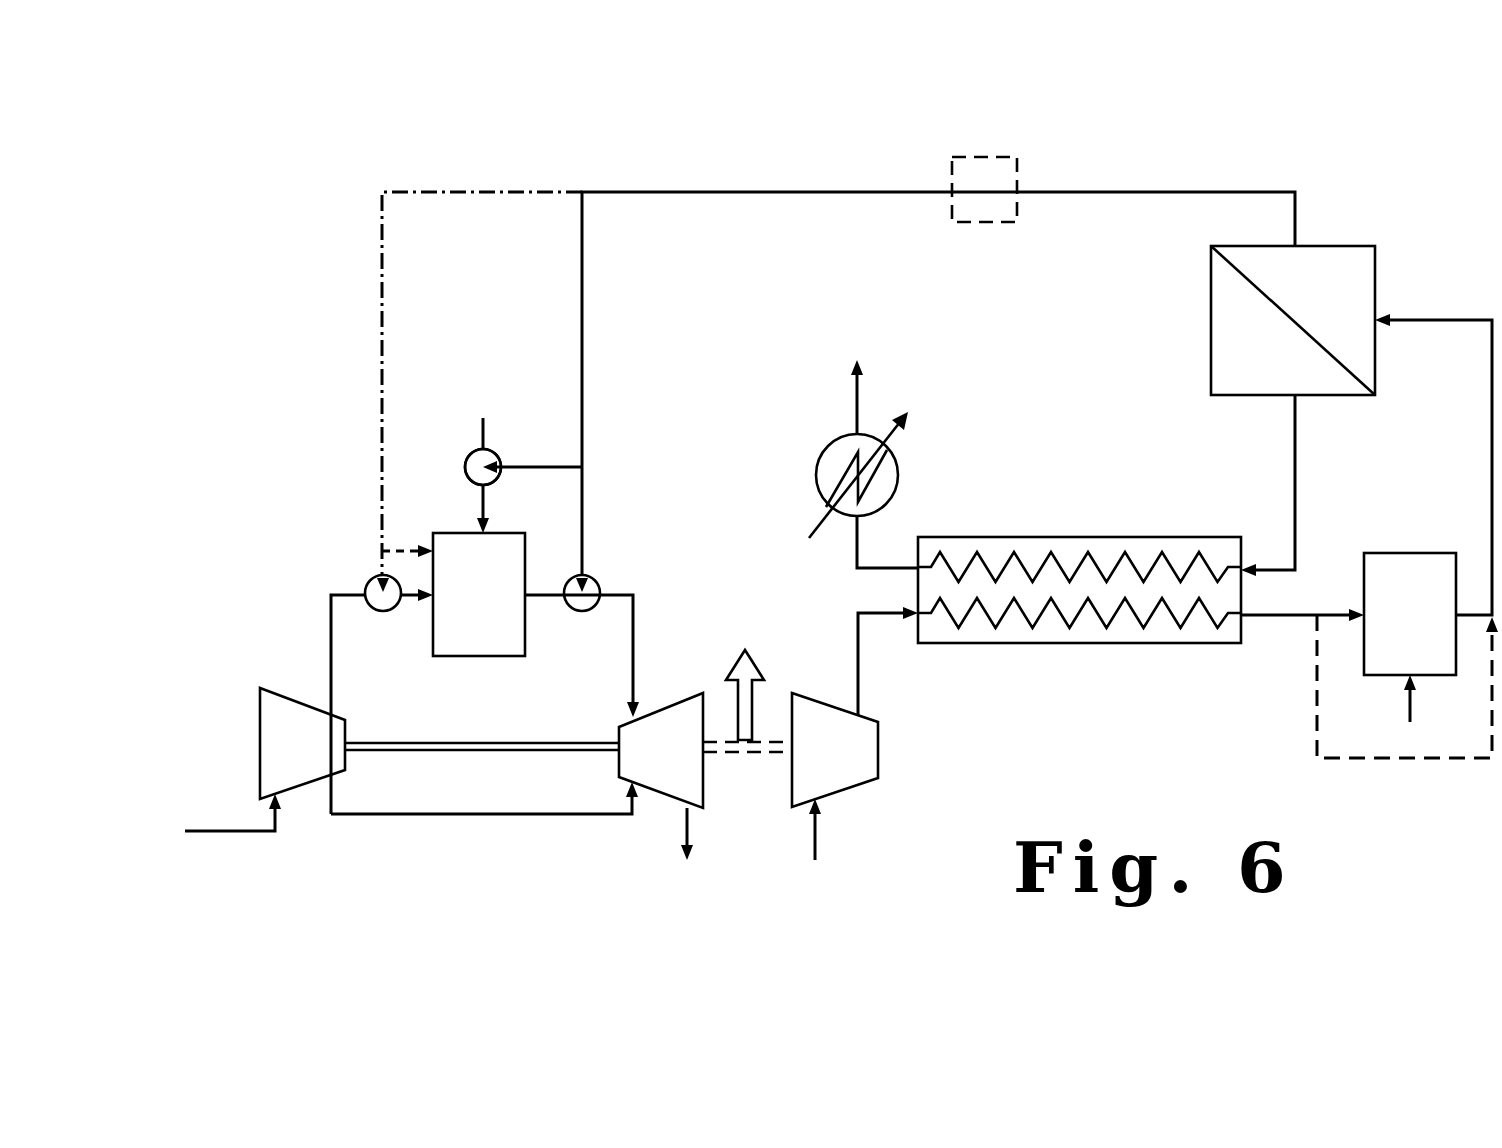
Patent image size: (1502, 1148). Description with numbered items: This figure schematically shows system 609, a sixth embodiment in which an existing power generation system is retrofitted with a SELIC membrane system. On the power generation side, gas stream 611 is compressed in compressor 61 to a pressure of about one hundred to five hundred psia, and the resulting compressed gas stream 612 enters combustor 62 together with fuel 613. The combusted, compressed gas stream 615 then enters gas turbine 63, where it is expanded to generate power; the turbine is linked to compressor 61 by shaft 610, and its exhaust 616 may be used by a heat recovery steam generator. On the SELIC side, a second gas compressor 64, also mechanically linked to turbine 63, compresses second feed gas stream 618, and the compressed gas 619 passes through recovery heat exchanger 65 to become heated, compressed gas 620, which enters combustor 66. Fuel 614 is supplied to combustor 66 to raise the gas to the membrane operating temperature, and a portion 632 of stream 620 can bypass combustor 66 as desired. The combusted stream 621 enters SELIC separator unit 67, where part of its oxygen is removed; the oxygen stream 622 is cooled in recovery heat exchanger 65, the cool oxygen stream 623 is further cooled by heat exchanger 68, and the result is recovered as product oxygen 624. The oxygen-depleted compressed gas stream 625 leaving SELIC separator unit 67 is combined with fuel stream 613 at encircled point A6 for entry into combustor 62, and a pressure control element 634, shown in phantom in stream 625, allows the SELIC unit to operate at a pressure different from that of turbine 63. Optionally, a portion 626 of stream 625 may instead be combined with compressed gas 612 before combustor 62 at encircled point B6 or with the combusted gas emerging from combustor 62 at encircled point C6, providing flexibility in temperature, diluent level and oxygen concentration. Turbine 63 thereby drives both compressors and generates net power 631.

The compressor 61 is at (302, 743).
The combustor 62 is at (483, 594).
The gas turbine 63 is at (517, 753).
The second gas compressor 64 is at (835, 750).
The recovery heat exchanger 65 is at (1059, 643).
The combustor 66 is at (1414, 614).
The SELIC separator unit 67 is at (1293, 326).
The heat exchanger 68 is at (898, 475).
The system 609 is at (1333, 210).
The shaft 610 is at (580, 742).
The gas stream 611 is at (238, 831).
The compressed gas stream 612 is at (331, 678).
The fuel 613 is at (483, 435).
The fuel 614 is at (1410, 708).
The combusted, compressed gas stream 615 is at (633, 648).
The exhaust 616 is at (687, 825).
The second feed gas stream 618 is at (815, 838).
The compressed gas 619 is at (887, 613).
The heated, compressed gas 620 is at (1290, 617).
The combusted stream 621 is at (1492, 450).
The oxygen stream 622 is at (1297, 470).
The cool oxygen stream 623 is at (880, 569).
The product oxygen 624 is at (857, 405).
The oxygen-depleted compressed gas stream 625 is at (1138, 192).
The portion of oxygen-depleted compressed gas stream 626 is at (443, 192).
The net power 631 is at (752, 695).
The portion of stream 620 632 is at (1387, 760).
The pressure control element 634 is at (1020, 170).
The encircled point A6 is at (463, 460).
The encircled point B6 is at (365, 578).
The encircled point C6 is at (602, 587).